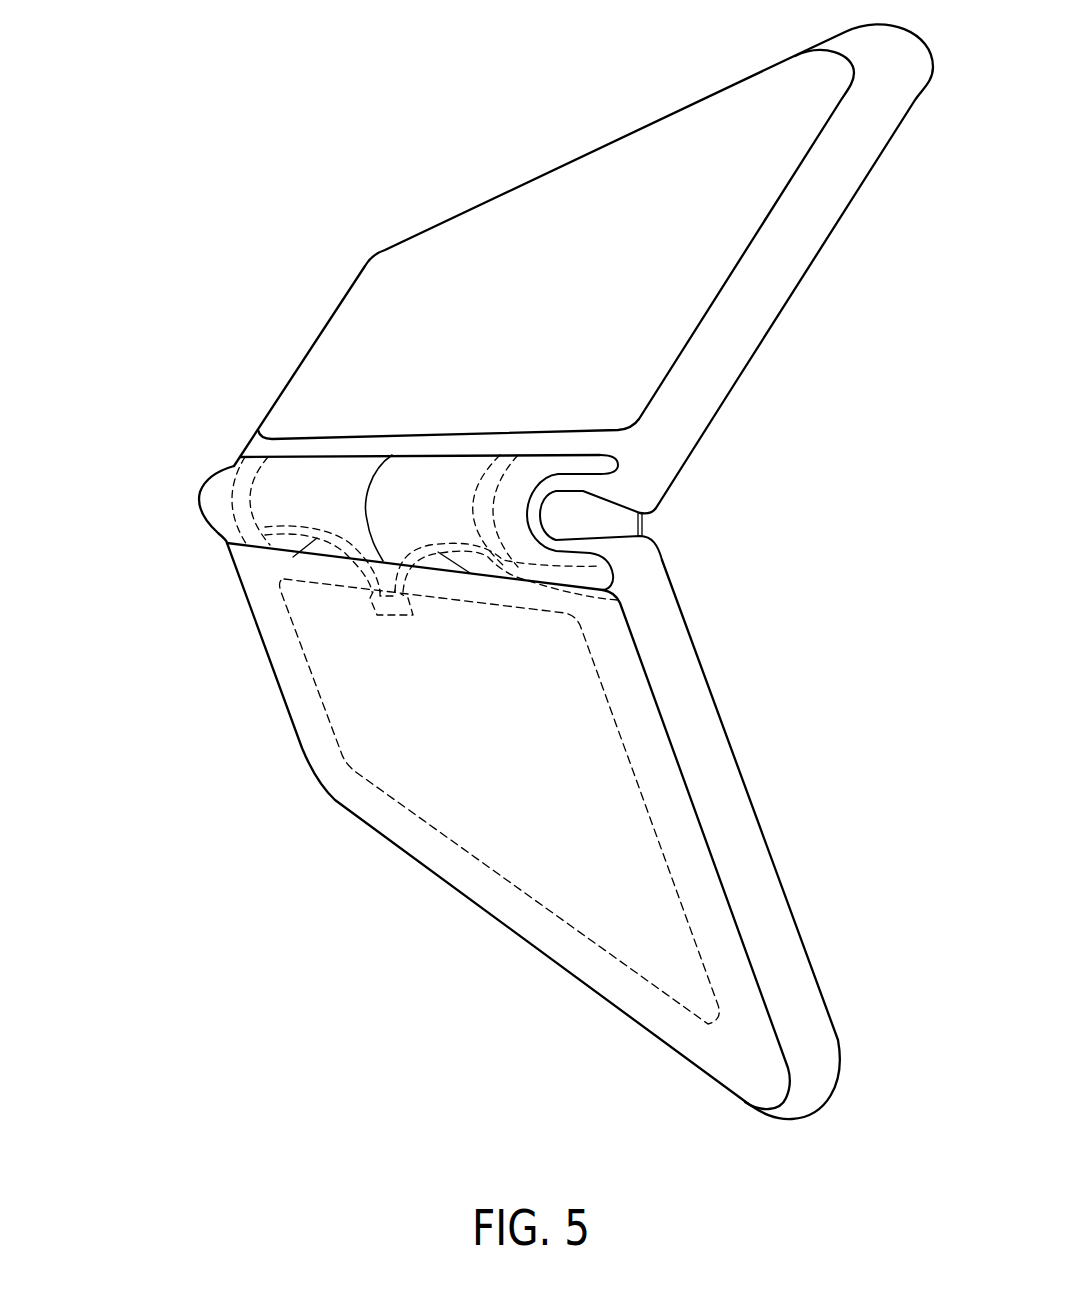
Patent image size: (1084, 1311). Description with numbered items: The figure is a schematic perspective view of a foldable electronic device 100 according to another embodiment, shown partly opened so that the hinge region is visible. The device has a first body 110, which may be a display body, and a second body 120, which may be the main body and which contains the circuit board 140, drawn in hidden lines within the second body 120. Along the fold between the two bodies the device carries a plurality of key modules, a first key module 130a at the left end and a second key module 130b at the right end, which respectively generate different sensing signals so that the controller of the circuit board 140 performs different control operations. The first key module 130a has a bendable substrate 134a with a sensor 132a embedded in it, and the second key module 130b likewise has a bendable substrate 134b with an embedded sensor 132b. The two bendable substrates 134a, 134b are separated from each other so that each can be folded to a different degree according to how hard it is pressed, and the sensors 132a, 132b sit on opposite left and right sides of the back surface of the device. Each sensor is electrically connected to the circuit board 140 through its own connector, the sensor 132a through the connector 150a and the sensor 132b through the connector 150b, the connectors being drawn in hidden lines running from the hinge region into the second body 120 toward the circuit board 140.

The foldable electronic device 100 is at (884, 1175).
The first body 110 is at (818, 222).
The second body 120 is at (757, 875).
The key module 130a is at (168, 481).
The sensor 132a is at (243, 505).
The bendable substrate 134a is at (207, 484).
The key module 130b is at (654, 522).
The sensor 132b is at (600, 566).
The bendable substrate 134b is at (594, 463).
The circuit board 140 is at (511, 856).
The connector 150a is at (293, 557).
The connector 150b is at (617, 600).